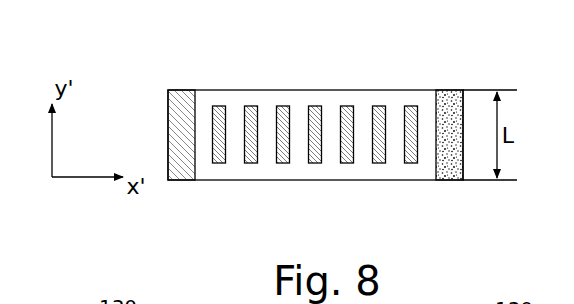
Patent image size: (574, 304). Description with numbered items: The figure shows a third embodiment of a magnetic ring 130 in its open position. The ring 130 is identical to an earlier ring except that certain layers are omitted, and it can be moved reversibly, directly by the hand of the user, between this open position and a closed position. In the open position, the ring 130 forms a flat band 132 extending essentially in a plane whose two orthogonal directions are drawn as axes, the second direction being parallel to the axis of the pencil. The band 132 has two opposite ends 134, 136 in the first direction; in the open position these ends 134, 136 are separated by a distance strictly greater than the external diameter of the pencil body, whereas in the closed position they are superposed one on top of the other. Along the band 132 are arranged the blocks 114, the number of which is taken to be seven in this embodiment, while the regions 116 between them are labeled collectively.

The ring 130 is at (293, 132).
The band 132 is at (300, 86).
The end 134 is at (172, 104).
The end 136 is at (447, 92).
The blocks 114 is at (285, 107).
The gaps between electrodes 116 is at (235, 160).